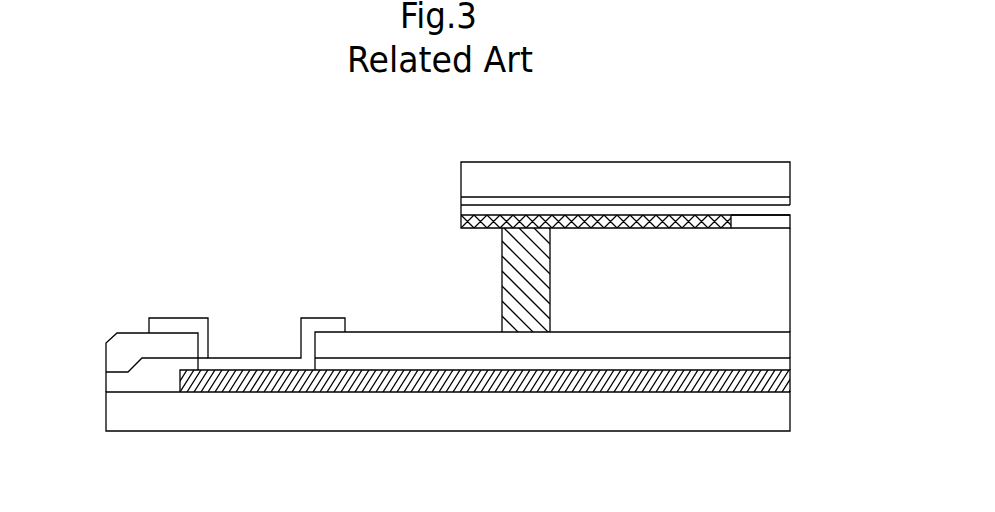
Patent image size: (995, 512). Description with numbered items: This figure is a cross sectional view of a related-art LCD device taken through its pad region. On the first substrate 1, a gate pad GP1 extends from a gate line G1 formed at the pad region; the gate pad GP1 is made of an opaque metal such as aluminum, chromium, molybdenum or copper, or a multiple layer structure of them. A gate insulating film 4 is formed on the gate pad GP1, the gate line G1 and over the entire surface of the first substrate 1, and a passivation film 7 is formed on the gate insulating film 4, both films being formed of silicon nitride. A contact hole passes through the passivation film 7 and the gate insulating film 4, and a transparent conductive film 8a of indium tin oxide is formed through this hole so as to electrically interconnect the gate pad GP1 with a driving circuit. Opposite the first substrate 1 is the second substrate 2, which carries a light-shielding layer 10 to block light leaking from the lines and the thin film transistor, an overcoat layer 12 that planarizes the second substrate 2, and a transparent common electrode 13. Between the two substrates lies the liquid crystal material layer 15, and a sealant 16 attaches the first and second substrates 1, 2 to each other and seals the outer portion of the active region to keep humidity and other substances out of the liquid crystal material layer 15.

The first substrate 1 is at (778, 408).
The second substrate 2 is at (621, 176).
The gate insulating film 4 is at (775, 366).
The passivation film 7 is at (775, 340).
The transparent conductive film 8a is at (178, 326).
The light-shielding layer 10 is at (780, 198).
The overcoat layer 12 is at (780, 207).
The common electrode 13 is at (772, 225).
The liquid crystal material layer 15 is at (775, 298).
The sealant 16 is at (513, 277).
The gate line G1 is at (598, 393).
The gate pad GP1 is at (260, 393).